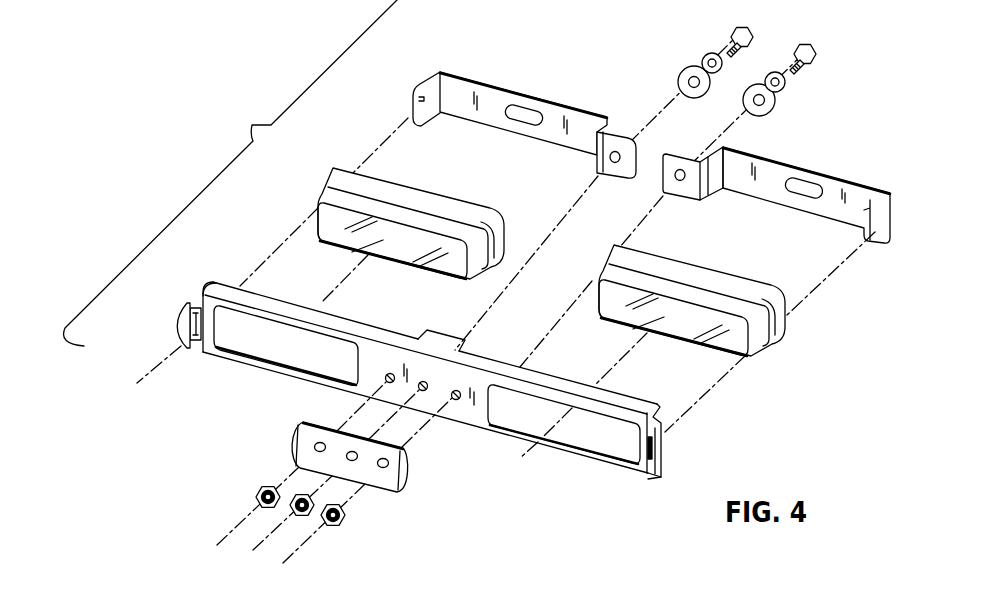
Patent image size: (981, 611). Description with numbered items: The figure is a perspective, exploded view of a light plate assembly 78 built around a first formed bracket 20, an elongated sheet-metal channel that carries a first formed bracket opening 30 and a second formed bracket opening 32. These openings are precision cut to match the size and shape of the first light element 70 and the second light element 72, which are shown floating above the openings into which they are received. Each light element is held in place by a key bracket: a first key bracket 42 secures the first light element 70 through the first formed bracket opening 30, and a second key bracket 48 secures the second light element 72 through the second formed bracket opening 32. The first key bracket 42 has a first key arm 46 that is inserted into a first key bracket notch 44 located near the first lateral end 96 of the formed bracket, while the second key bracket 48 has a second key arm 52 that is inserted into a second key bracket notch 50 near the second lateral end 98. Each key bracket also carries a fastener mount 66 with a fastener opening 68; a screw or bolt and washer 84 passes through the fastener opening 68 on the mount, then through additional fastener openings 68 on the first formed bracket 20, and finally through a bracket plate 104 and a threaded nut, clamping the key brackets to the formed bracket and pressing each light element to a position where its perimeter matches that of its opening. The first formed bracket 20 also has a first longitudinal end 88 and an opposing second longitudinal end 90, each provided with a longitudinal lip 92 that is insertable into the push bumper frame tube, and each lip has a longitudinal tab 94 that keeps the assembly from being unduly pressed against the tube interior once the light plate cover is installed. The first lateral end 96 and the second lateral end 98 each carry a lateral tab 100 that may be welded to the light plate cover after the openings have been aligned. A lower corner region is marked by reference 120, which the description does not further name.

The first formed bracket 20 is at (479, 429).
The first formed bracket opening 30 is at (247, 338).
The second formed bracket opening 32 is at (587, 433).
The first key bracket 42 is at (473, 82).
The first key bracket notch 44 is at (194, 315).
The first key arm 46 is at (425, 88).
The second key bracket 48 is at (840, 182).
The second key bracket notch 50 is at (663, 433).
The second key arm 52 is at (885, 235).
The fastener mount 66 is at (669, 160).
The fastener opening 68 is at (677, 177).
The first light element 70 is at (425, 190).
The second light element 72 is at (702, 263).
The light plate assembly 78 is at (230, 173).
The screw or bolt and washer 84 is at (728, 35).
The first longitudinal end 88 is at (363, 342).
The second longitudinal end 90 is at (437, 421).
The longitudinal lip 92 is at (528, 371).
The longitudinal tab 94 is at (453, 329).
The first lateral end 96 is at (207, 282).
The second lateral end 98 is at (663, 459).
The lateral tab 100 is at (182, 320).
The bracket plate 104 is at (397, 491).
The lower corner 120 is at (660, 475).